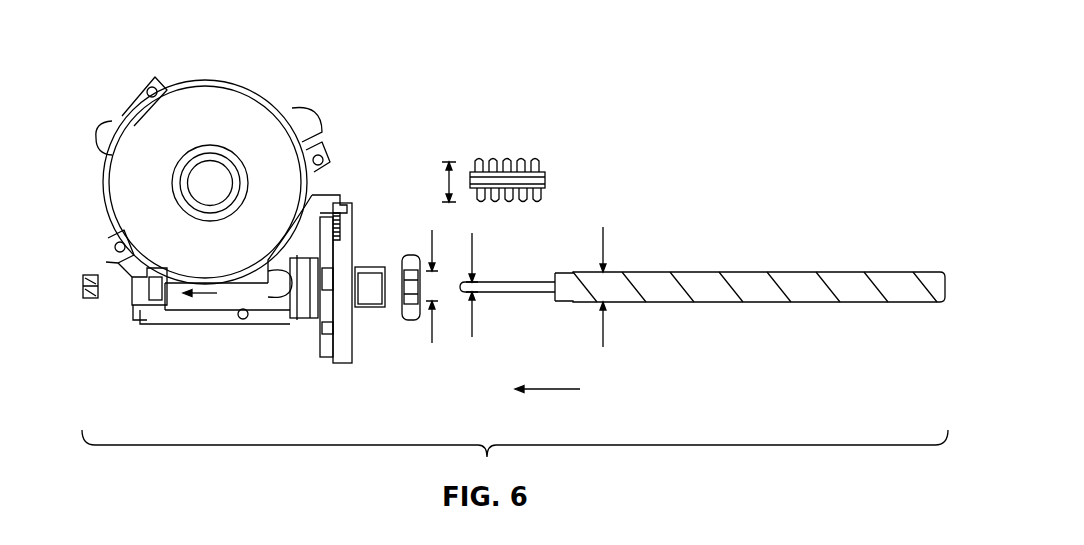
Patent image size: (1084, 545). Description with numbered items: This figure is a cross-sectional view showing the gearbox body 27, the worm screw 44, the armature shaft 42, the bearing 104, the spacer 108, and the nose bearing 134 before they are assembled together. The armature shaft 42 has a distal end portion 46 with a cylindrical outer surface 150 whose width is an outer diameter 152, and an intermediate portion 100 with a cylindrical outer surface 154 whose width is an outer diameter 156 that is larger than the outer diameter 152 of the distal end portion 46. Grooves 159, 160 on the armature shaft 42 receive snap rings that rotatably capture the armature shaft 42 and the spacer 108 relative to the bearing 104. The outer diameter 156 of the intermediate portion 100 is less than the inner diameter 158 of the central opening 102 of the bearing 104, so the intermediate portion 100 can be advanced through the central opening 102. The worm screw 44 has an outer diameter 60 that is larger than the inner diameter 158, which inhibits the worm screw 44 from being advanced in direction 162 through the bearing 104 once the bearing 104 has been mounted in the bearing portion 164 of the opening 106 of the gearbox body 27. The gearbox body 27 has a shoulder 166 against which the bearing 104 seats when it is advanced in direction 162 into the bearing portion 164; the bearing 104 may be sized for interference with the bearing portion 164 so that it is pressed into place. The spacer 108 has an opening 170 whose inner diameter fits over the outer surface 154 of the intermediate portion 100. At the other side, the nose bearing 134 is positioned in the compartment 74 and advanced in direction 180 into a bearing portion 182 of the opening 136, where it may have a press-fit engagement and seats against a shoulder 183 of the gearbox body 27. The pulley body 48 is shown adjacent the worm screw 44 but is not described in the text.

The compartment 74 is at (222, 110).
The gearbox body 27 is at (283, 104).
The worm screw 44 is at (530, 158).
The pulley hub 48 is at (545, 178).
The outer diameter 60 is at (448, 180).
The central opening 102 is at (408, 282).
The bearing 104 is at (408, 320).
The spacer 108 is at (375, 300).
The opening 170 is at (368, 300).
The bearing portion 164 is at (310, 320).
The shoulder 166 is at (295, 320).
The opening 106 is at (302, 295).
The direction 180 is at (200, 295).
The bearing portion 182 is at (157, 292).
The opening 136 is at (135, 292).
The nose bearing 134 is at (88, 300).
The shoulder 183 is at (132, 280).
The distal end portion 46 is at (502, 281).
The cylindrical outer surface 150 is at (528, 292).
The outer diameter 152 is at (472, 313).
The groove 159 is at (577, 272).
The cylindrical outer surface 154 is at (613, 272).
The groove 160 is at (625, 272).
The outer diameter 156 is at (603, 315).
The intermediate portion 100 is at (658, 288).
The armature shaft 42 is at (808, 292).
The direction 162 is at (543, 390).
The inner diameter 158 is at (435, 325).